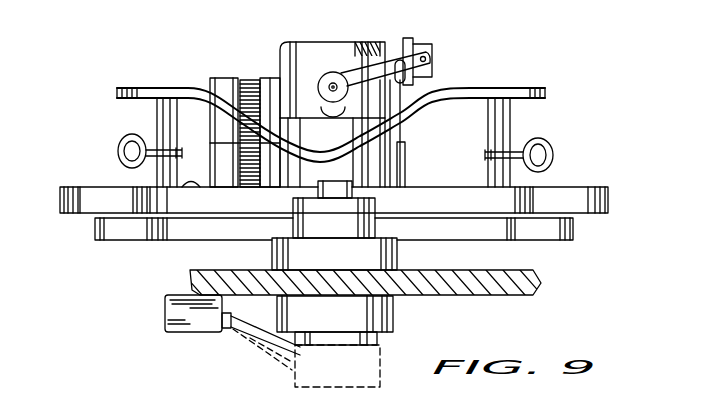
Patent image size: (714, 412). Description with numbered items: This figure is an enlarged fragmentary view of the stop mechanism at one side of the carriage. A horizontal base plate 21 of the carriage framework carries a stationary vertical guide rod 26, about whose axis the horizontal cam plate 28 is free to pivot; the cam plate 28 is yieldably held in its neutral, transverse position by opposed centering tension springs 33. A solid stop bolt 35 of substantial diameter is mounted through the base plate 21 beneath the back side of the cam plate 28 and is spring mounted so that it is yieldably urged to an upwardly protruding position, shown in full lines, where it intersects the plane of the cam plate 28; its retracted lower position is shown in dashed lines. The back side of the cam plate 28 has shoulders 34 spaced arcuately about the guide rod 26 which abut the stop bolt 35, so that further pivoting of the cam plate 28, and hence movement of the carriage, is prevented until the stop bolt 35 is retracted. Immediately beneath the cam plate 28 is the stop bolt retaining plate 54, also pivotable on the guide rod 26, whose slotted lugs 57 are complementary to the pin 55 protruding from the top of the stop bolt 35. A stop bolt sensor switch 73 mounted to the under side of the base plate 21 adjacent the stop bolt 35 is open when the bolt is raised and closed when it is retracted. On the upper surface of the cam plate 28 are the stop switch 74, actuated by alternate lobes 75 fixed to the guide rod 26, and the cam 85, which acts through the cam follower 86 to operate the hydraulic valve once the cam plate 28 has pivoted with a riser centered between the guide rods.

The base plate 21 is at (528, 283).
The guide rod 26 is at (365, 42).
The cam plate 28 is at (60, 200).
The centering tension spring 33 is at (118, 152).
The shoulder 34 is at (133, 200).
The stop bolt 35 is at (380, 206).
The stop bolt retaining plate 54 is at (468, 230).
The pin 55 is at (323, 181).
The slotted lug 57 is at (144, 240).
The stop bolt sensor switch 73 is at (215, 332).
The stop switch 74 is at (242, 70).
The lobe 75 is at (256, 80).
The cam 85 is at (546, 89).
The cam follower 86 is at (326, 96).